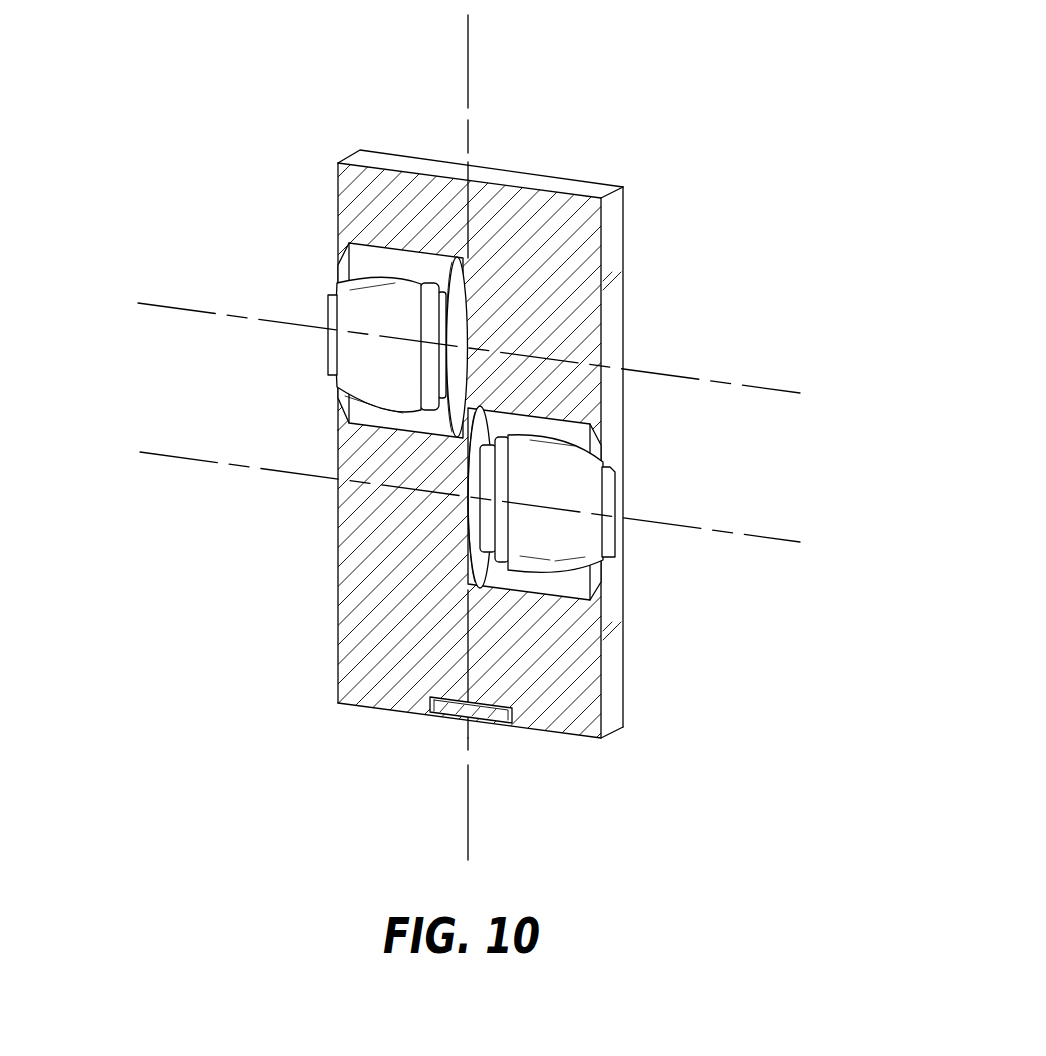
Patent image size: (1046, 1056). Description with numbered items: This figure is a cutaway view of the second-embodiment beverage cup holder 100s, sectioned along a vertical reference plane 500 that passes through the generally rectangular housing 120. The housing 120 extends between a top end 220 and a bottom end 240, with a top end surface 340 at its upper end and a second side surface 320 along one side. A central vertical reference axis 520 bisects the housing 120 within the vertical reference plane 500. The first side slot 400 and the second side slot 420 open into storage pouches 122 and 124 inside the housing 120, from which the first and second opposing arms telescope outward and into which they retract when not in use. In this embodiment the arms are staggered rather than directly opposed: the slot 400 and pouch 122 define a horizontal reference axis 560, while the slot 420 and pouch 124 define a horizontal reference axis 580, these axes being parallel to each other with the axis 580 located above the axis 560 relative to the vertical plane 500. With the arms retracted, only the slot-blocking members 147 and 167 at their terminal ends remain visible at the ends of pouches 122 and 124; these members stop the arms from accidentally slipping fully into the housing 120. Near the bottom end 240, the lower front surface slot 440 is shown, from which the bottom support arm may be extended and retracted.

The beverage cup holder 100s is at (676, 731).
The housing 120 is at (623, 233).
The storage pouch 122 is at (372, 368).
The storage pouch 124 is at (565, 543).
The slot-blocking member 147 is at (328, 342).
The slot-blocking member 167 is at (610, 495).
The top end 220 is at (338, 180).
The bottom end 240 is at (338, 677).
The second side surface 320 is at (612, 328).
The top end surface 340 is at (405, 165).
The first side slot 400 is at (345, 276).
The second side slot 420 is at (598, 458).
The lower front surface slot 440 is at (453, 705).
The vertical reference plane 500 is at (548, 235).
The central vertical reference axis 520 is at (477, 77).
The horizontal reference axis 560 is at (757, 533).
The horizontal reference axis 580 is at (170, 305).